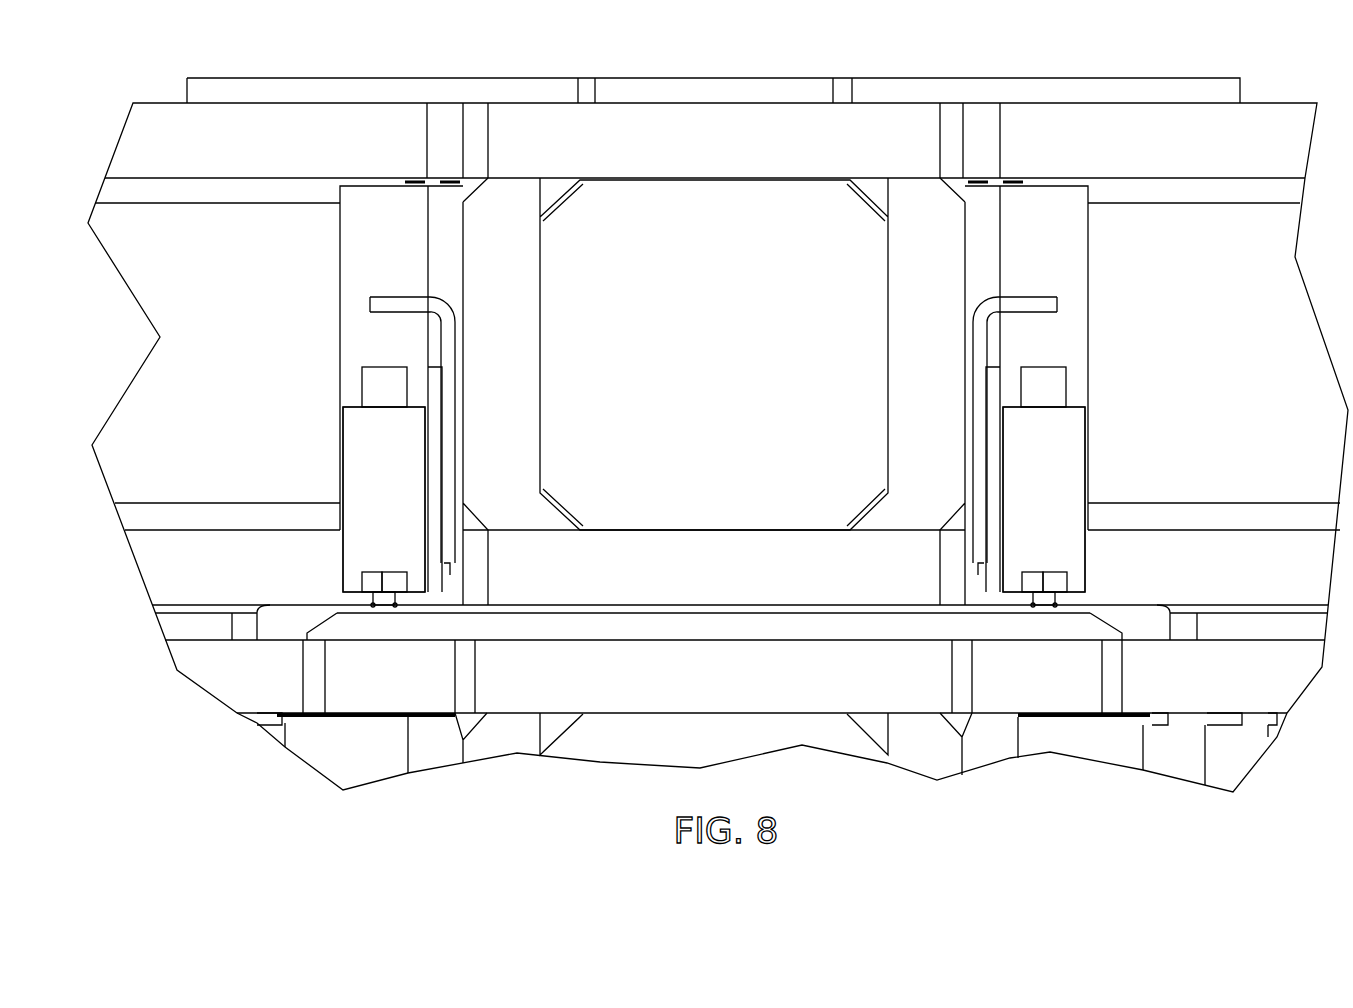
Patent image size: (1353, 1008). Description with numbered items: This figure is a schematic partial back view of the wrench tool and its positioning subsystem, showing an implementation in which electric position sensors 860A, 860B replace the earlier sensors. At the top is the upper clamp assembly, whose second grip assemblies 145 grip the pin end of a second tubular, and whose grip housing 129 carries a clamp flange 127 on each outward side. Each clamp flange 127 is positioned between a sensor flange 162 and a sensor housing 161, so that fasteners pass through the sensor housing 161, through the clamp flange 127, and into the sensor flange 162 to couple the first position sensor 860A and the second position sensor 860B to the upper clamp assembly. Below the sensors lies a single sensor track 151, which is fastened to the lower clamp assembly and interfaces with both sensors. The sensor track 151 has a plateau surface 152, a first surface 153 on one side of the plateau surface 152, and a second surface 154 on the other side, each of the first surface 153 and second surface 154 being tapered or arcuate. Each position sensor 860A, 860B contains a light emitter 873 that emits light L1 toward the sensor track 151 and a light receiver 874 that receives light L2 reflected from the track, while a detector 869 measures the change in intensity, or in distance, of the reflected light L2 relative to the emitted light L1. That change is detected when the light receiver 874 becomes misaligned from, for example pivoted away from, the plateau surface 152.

The second grip assemblies 145 is at (717, 232).
The grip housing 129 is at (915, 272).
The clamp flange 127 is at (432, 395).
The sensor flange 162 is at (400, 300).
The detector 869 is at (392, 383).
The sensor housing 161 is at (375, 470).
The second position sensor 860B is at (328, 435).
The first position sensor 860A is at (1093, 448).
The light emitter 873 is at (358, 582).
The light receiver 874 is at (396, 580).
The emitted light L1 is at (372, 598).
The reflected light L2 is at (400, 608).
The plateau surface 152 is at (738, 613).
The sensor track 151 is at (768, 642).
The second surface 154 is at (325, 620).
The first surface 153 is at (1090, 620).